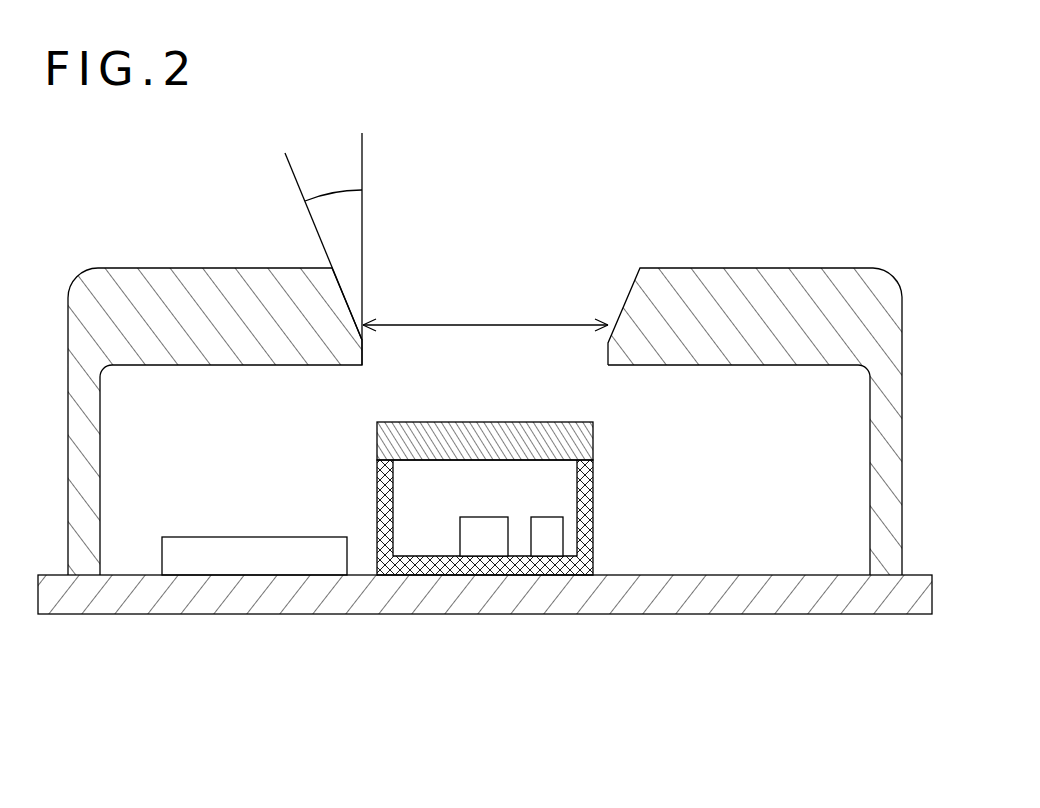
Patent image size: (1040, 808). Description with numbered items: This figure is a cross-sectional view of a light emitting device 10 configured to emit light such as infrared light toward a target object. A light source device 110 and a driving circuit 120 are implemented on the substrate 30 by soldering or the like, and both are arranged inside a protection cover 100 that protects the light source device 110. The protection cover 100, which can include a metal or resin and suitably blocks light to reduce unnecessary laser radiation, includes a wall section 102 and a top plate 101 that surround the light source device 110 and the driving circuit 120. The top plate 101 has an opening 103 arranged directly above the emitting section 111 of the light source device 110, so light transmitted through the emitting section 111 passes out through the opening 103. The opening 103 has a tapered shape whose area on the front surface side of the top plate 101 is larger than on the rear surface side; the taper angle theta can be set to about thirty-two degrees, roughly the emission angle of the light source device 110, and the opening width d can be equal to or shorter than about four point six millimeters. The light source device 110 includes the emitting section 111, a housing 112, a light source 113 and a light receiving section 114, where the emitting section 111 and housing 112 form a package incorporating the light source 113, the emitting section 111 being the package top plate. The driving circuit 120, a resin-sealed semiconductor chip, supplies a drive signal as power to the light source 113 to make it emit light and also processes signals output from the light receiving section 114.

The light emitting device 10 is at (893, 178).
The substrate 30 is at (745, 614).
The protection cover 100 is at (897, 272).
The top plate 101 is at (745, 268).
The wall section 102 is at (902, 485).
The opening 103 is at (508, 273).
The light source device 110 is at (535, 412).
The emitting section 111 is at (467, 422).
The housing 112 is at (595, 500).
The light source 113 is at (480, 543).
The light receiving section 114 is at (547, 543).
The driving circuit 120 is at (253, 537).